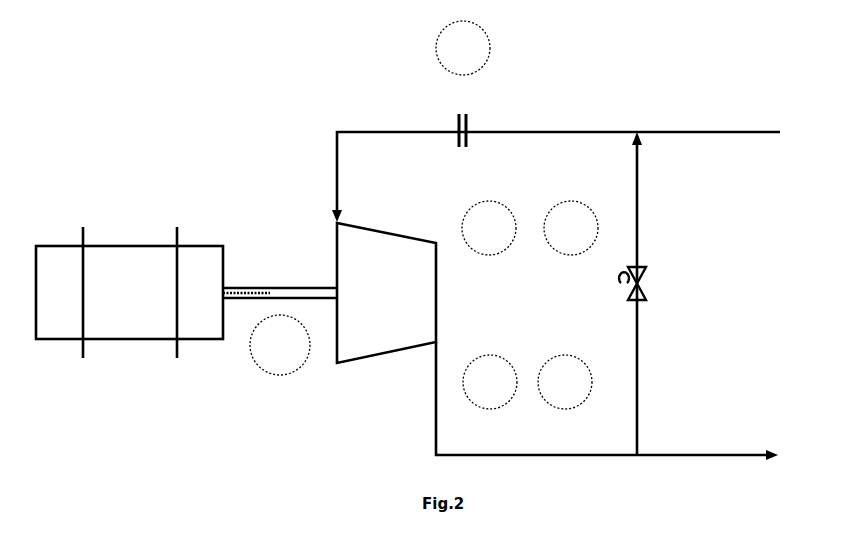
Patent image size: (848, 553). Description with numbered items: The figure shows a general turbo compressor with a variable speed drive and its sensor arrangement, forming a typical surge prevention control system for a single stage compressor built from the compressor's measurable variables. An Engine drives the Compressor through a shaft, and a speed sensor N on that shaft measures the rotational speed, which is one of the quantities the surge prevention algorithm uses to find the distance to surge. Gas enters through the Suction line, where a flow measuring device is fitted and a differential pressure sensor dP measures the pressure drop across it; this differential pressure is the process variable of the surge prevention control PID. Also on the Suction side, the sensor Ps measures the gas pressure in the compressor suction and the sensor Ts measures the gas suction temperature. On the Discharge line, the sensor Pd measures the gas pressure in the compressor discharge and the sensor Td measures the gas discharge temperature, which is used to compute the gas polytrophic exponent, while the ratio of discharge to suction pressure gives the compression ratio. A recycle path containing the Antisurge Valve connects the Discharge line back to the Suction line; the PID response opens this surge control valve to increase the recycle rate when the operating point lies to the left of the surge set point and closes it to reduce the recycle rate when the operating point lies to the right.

The engine Engine is at (129, 280).
The rotational speed sensor N is at (282, 298).
The compressor Compressor is at (394, 282).
The compressor suction Suction is at (556, 177).
The compressor discharge Discharge is at (612, 414).
The antisurge valve Antisurge Valve is at (566, 293).
The pressure differential across the flow measuring device dP is at (475, 132).
The gas pressure in the compressor suction Ps is at (489, 132).
The gas suction temperature Ts is at (571, 132).
The gas pressure in the compressor discharge Pd is at (476, 397).
The gas discharge temperature Td is at (565, 455).